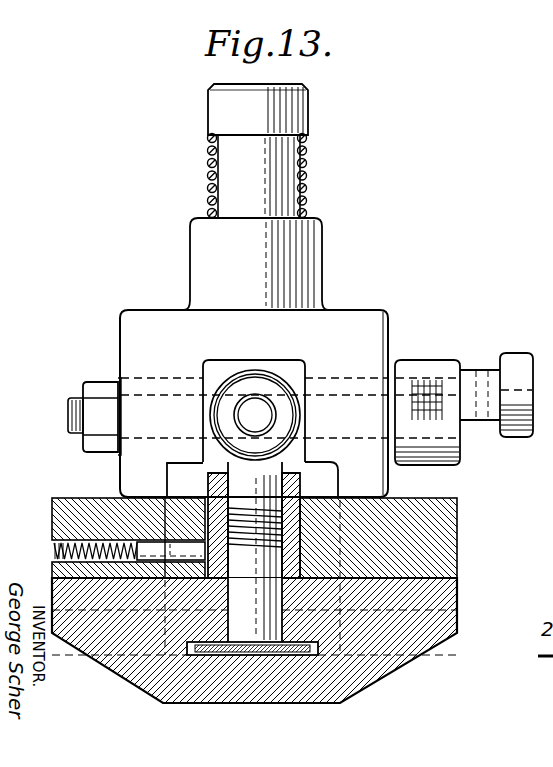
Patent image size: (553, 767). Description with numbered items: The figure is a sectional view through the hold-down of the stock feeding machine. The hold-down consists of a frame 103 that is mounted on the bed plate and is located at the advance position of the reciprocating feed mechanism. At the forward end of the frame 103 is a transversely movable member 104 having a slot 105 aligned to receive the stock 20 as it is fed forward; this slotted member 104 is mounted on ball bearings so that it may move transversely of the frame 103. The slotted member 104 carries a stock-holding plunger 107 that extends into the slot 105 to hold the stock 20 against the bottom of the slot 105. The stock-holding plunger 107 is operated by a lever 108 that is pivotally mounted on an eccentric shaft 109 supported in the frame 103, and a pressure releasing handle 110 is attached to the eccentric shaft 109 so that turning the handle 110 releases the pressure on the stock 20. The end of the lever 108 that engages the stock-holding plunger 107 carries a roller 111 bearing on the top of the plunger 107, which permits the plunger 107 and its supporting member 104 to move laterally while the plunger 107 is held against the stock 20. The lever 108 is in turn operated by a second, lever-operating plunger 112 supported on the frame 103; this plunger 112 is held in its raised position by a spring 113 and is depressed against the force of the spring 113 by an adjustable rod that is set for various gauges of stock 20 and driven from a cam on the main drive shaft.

The frame 103 is at (120, 343).
The transversely movable member 104 is at (357, 682).
The slot 105 is at (187, 656).
The stock-holding plunger 107 is at (166, 472).
The lever 108 is at (255, 402).
The eccentric shaft 109 is at (70, 417).
The pressure releasing handle 110 is at (470, 372).
The roller 111 is at (288, 386).
The lever-operating plunger 112 is at (307, 110).
The spring 113 is at (306, 172).
The stock 20 is at (299, 657).